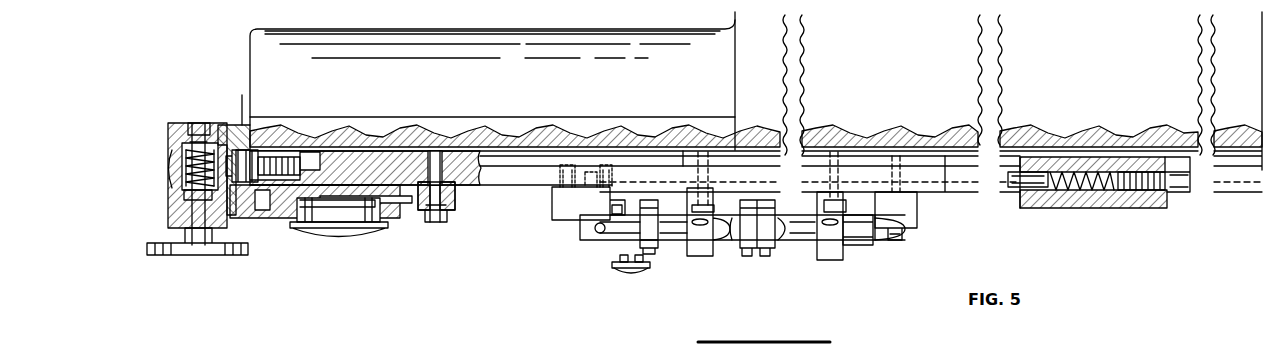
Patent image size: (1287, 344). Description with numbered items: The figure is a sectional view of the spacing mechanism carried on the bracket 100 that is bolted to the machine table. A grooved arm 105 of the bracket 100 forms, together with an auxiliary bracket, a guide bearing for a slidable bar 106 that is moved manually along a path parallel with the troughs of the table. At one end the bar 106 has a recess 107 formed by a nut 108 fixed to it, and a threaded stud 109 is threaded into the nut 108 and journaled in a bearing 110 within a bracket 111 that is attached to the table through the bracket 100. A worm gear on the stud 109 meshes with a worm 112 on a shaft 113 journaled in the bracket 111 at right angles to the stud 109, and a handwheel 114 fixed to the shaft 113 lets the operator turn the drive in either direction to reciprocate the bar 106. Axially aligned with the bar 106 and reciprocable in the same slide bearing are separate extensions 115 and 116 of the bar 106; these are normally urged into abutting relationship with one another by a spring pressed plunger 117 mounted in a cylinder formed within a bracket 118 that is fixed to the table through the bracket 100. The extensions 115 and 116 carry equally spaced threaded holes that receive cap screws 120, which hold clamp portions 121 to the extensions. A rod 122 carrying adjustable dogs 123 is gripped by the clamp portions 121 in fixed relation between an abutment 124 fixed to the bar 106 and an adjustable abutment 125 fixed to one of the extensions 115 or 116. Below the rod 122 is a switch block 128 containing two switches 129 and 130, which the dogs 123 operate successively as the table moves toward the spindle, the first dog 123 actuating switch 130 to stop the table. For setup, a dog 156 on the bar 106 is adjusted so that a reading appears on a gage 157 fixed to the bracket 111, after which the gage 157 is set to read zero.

The bracket 100 is at (563, 91).
The grooved arm 105 is at (1244, 182).
The slidable bar 106 is at (528, 180).
The recess 107 is at (313, 160).
The nut 108 is at (268, 148).
The threaded stud 109 is at (247, 150).
The bearing 110 is at (232, 142).
The bracket 111 is at (172, 123).
The worm 112 is at (192, 170).
The shaft 113 is at (194, 217).
The handwheel 114 is at (170, 252).
The extension 115 is at (738, 160).
The extension 116 is at (1005, 152).
The spring pressed plunger 117 is at (1013, 192).
The bracket 118 is at (1120, 206).
The cap screw 120 is at (843, 150).
The clamp portion 121 is at (696, 253).
The rod 122 is at (867, 245).
The adjustable dog 123 is at (655, 250).
The abutment 124 is at (580, 233).
The adjustable abutment 125 is at (905, 212).
The switch block 128 is at (645, 272).
The switch 129 is at (637, 272).
The switch 130 is at (620, 262).
The dog 156 is at (448, 215).
The gage 157 is at (378, 230).